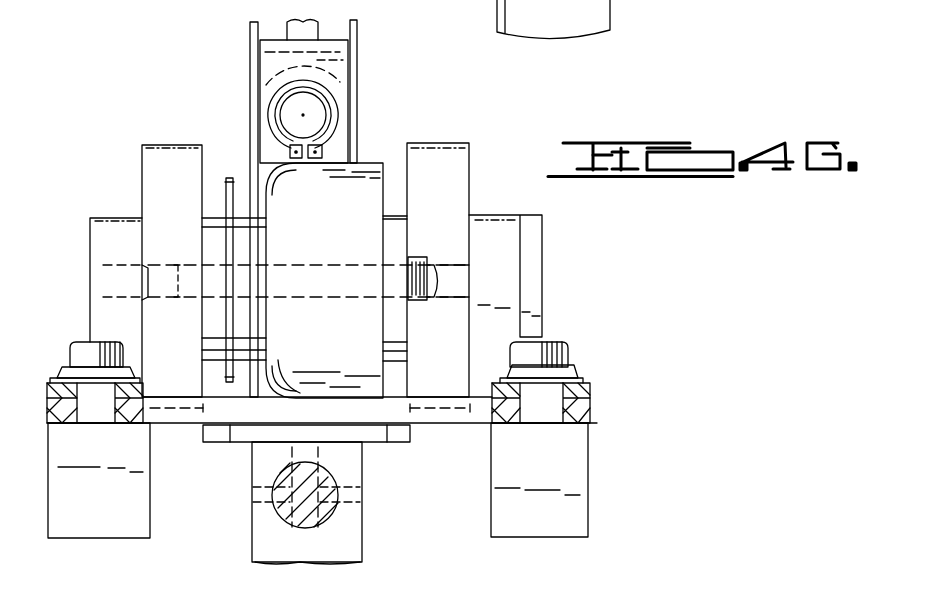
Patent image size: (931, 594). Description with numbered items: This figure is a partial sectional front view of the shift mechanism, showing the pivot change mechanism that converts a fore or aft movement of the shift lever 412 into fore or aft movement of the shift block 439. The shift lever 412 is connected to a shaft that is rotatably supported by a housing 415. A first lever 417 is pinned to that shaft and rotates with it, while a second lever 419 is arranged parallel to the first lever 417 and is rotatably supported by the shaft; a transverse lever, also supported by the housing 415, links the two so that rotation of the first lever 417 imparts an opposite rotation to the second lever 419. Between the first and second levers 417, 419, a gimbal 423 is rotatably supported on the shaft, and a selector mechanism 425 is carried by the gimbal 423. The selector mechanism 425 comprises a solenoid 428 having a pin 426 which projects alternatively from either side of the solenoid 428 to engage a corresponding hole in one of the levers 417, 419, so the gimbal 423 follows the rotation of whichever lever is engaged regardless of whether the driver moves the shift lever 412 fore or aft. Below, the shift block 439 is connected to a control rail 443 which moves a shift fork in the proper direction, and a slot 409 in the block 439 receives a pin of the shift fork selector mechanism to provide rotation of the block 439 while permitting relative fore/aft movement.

The slot 409 is at (272, 495).
The shift lever 412 is at (312, 27).
The housing 415 is at (490, 230).
The first lever 417 is at (460, 157).
The second lever 419 is at (175, 155).
The gimbal 423 is at (212, 227).
The selector mechanism 425 is at (378, 133).
The pin 426 is at (308, 280).
The solenoid 428 is at (287, 357).
The shift block 439 is at (347, 517).
The control rail 443 is at (328, 473).